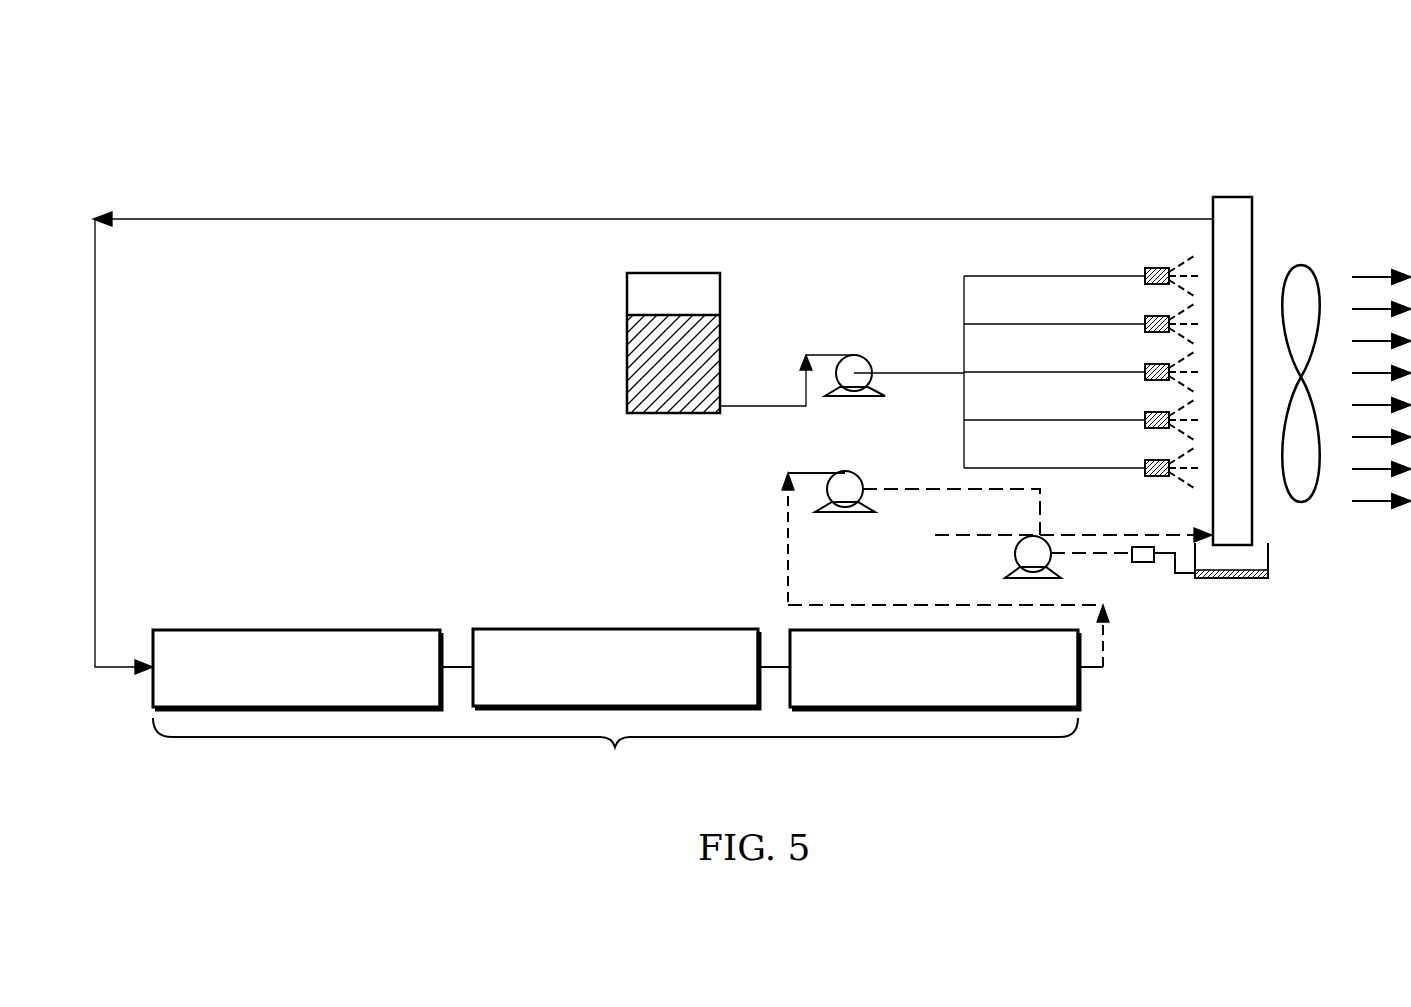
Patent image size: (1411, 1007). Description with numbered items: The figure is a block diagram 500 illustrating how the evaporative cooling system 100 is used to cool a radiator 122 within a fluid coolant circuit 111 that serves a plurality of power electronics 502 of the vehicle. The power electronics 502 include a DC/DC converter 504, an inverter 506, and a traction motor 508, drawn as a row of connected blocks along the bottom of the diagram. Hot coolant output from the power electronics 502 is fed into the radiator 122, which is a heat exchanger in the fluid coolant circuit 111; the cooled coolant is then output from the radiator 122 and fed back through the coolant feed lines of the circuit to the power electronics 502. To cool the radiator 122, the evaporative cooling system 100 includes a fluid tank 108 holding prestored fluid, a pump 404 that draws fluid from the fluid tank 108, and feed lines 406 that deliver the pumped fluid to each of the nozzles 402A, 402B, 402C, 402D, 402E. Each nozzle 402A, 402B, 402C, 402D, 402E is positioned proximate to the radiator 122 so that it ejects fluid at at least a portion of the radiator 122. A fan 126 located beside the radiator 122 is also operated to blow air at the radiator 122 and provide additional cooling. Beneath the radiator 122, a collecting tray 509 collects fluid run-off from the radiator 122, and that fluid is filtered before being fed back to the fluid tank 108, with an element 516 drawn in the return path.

The block diagram 500 is at (140, 72).
The evaporative cooling system 100 is at (738, 460).
The fluid coolant circuit 111 is at (972, 200).
The fluid tank 108 is at (627, 296).
The pump 404 is at (852, 355).
The feed lines 406 is at (964, 285).
The nozzle 402A is at (1145, 270).
The nozzle 402B is at (1145, 318).
The nozzle 402C is at (1145, 366).
The nozzle 402D is at (1145, 414).
The nozzle 402E is at (1145, 462).
The radiator 122 is at (1252, 205).
The fan 126 is at (1305, 268).
The collecting tray 509 is at (1268, 560).
The valve 516 is at (1145, 562).
The traction motor 508 is at (883, 630).
The DC/DC converter 504 is at (295, 630).
The inverter 506 is at (612, 629).
The power electronics 502 is at (615, 753).